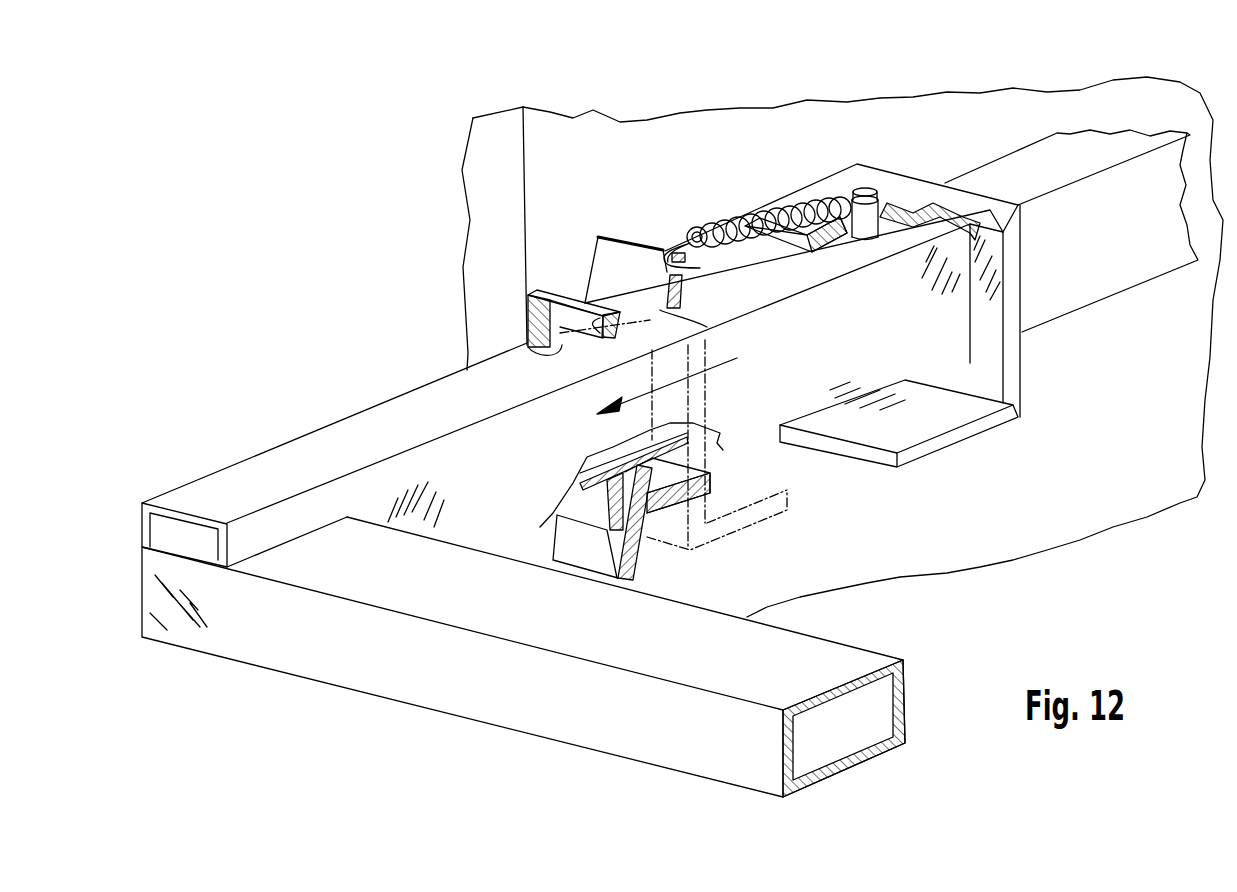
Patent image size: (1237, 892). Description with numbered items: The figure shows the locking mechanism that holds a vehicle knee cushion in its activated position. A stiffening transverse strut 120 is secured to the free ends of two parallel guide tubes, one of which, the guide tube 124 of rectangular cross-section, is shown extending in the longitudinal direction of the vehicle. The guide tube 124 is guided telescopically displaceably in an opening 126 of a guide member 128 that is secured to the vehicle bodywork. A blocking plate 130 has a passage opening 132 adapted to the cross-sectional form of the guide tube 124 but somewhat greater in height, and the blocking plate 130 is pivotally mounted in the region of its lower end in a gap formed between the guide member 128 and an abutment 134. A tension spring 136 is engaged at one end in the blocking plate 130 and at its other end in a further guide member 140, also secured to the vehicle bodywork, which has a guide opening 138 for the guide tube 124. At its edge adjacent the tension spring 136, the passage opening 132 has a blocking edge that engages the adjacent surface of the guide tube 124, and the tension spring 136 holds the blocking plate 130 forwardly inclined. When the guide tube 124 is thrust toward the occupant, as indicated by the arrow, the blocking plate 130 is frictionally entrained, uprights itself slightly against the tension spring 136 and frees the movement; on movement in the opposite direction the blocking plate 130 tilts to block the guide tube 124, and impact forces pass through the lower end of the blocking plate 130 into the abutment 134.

The stiffening transverse strut 120 is at (837, 657).
The guide tube 124 is at (348, 433).
The opening 126 is at (520, 352).
The guide member 128 is at (550, 313).
The blocking plate 130 is at (617, 257).
The passage opening 132 is at (680, 313).
The abutment 134 is at (693, 540).
The tension spring 136 is at (717, 227).
The guide opening 138 is at (972, 315).
The further guide member 140 is at (990, 383).